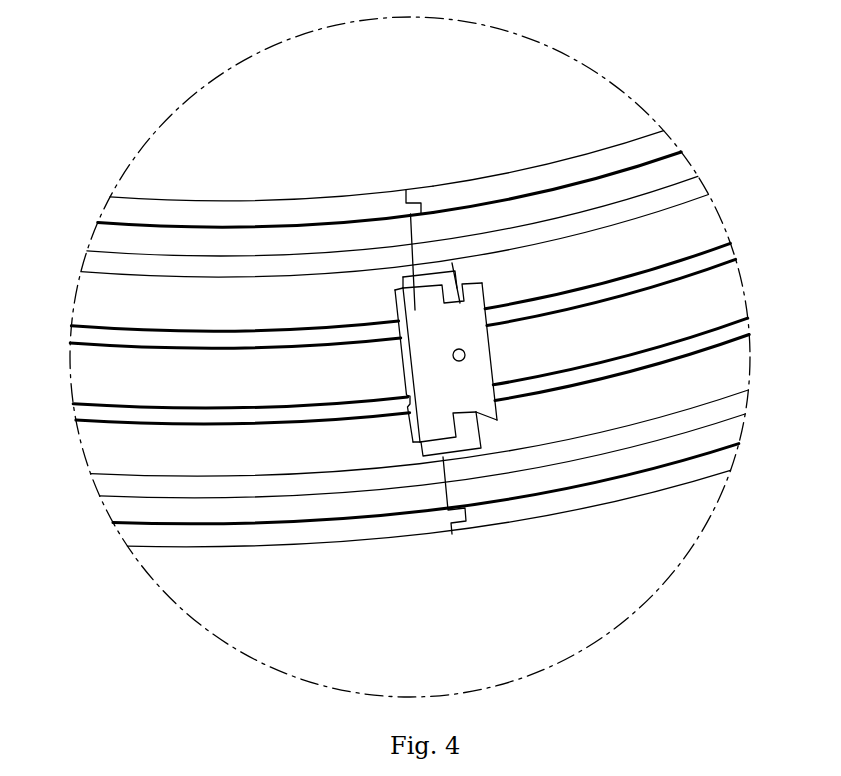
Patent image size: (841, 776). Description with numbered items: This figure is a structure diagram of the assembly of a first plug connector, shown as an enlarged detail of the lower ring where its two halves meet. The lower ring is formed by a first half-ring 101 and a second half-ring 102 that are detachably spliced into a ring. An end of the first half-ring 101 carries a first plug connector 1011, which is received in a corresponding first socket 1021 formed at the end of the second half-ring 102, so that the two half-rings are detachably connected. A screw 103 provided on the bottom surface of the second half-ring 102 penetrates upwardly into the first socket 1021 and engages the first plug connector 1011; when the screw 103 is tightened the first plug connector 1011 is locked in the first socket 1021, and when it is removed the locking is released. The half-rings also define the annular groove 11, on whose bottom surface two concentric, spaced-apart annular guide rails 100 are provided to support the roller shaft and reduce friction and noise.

The annular groove 11 is at (103, 377).
The annular guide rail 100 is at (730, 240).
The first half-ring 101 is at (230, 207).
The second half-ring 102 is at (598, 157).
The first plug connector 1011 is at (405, 283).
The first socket 1021 is at (453, 268).
The screw 103 is at (466, 357).